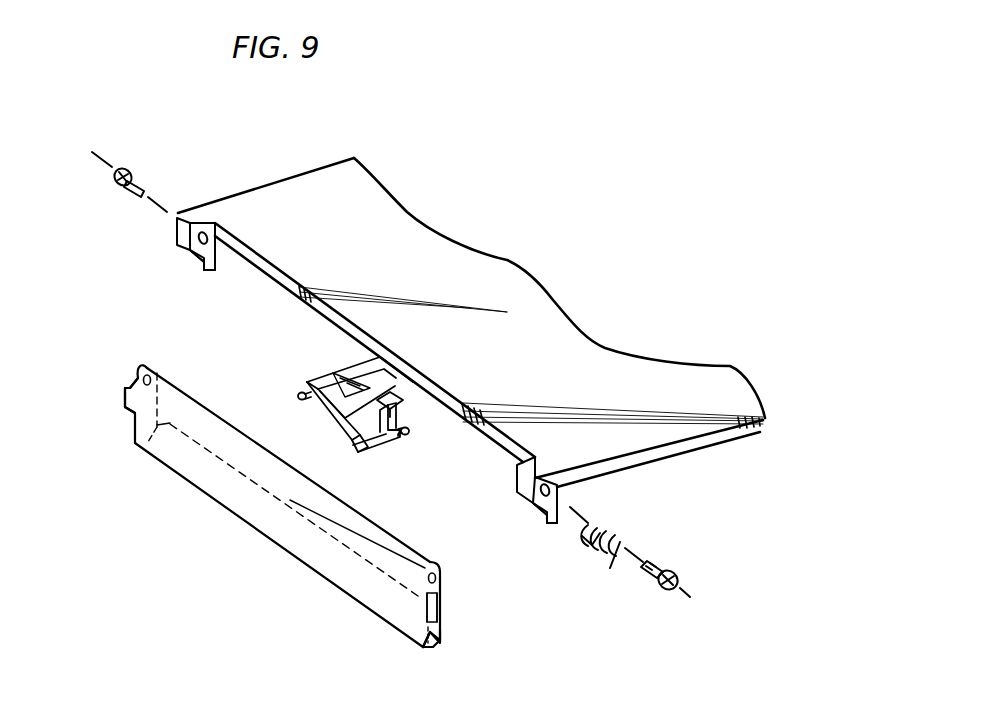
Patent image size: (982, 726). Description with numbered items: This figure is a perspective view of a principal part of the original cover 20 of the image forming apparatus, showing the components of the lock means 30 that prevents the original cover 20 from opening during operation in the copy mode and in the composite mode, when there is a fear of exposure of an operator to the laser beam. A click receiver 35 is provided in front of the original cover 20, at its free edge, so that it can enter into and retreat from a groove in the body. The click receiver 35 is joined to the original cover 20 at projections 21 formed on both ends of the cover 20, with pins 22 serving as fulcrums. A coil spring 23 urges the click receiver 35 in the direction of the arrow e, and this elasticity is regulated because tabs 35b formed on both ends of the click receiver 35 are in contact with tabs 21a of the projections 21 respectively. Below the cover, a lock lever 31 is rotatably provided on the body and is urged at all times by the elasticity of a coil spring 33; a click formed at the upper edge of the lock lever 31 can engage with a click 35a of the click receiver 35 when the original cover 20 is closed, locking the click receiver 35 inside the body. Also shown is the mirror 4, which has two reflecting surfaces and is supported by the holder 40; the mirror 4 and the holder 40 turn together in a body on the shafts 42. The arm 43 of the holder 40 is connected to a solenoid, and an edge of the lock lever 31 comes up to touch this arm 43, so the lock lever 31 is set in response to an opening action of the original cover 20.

The original cover 20 is at (277, 193).
The projections 21 is at (189, 236).
The tabs of the projections 21a is at (197, 258).
The pins 22 is at (136, 181).
The coil spring 23 is at (615, 535).
The mirror 4 is at (388, 378).
The holder 40 is at (326, 378).
The shafts 42 is at (298, 395).
The arm of the holder 43 is at (337, 420).
The coil spring 33 is at (411, 398).
The lock lever 31 is at (378, 452).
The lock means 30 is at (410, 454).
The click receiver 35 is at (222, 510).
The click of the click receiver 35a is at (442, 630).
The tabs of the click receiver 35b is at (125, 396).
The arrow e is at (445, 672).